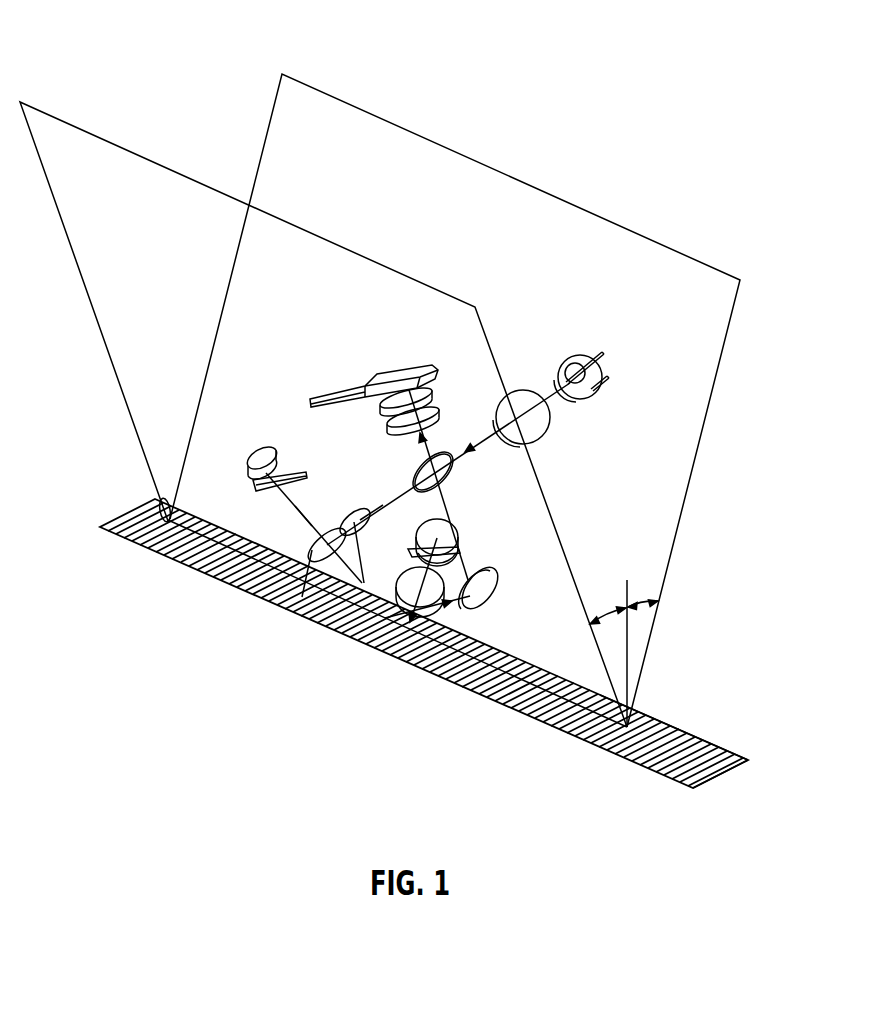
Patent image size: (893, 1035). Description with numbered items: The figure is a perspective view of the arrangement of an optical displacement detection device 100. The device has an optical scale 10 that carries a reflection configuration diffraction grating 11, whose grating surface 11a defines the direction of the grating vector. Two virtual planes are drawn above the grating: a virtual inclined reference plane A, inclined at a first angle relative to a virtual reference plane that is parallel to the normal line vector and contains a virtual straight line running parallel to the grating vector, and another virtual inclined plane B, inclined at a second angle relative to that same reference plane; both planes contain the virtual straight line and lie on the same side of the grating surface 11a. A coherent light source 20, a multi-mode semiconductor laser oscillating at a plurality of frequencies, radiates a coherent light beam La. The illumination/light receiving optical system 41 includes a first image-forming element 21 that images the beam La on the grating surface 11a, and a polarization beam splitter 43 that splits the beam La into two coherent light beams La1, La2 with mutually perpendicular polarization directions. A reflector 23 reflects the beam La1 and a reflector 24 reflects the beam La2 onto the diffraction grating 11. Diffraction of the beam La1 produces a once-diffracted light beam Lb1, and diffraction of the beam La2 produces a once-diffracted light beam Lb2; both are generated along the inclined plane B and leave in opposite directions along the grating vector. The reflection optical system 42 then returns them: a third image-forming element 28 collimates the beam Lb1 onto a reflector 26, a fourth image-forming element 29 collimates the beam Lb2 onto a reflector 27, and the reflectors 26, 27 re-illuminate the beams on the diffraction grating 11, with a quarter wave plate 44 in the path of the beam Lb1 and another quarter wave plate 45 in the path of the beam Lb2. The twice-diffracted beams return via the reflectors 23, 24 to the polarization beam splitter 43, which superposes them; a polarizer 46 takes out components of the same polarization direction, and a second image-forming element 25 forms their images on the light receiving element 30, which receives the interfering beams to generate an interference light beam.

The optical displacement detection device 100 is at (517, 108).
The optical scale 10 is at (548, 743).
The diffraction grating 11 is at (673, 724).
The grating surface 11a is at (713, 750).
The virtual inclined reference plane A is at (332, 97).
The virtual inclined plane B is at (63, 122).
The coherent light source 20 is at (578, 355).
The first image-forming element 21 is at (548, 432).
The reflector 23 is at (350, 515).
The reflector 24 is at (503, 589).
The second image-forming element 25 is at (386, 422).
The reflector 26 is at (256, 450).
The reflector 27 is at (458, 530).
The third image-forming element 28 is at (302, 597).
The fourth image-forming element 29 is at (399, 628).
The light receiving element 30 is at (402, 368).
The illumination/light receiving optical system 41 is at (412, 471).
The reflection optical system 42 is at (288, 444).
The polarization beam splitter 43 is at (415, 451).
The quarter wave plate 44 is at (254, 486).
The quarter wave plate 45 is at (460, 552).
The polarizer 46 is at (433, 394).
The coherent light beam La is at (543, 396).
The coherent light beam La1 is at (381, 505).
The coherent light beam La2 is at (445, 497).
The once-diffracted light beam Lb1 is at (298, 510).
The once-diffracted light beam Lb2 is at (422, 563).